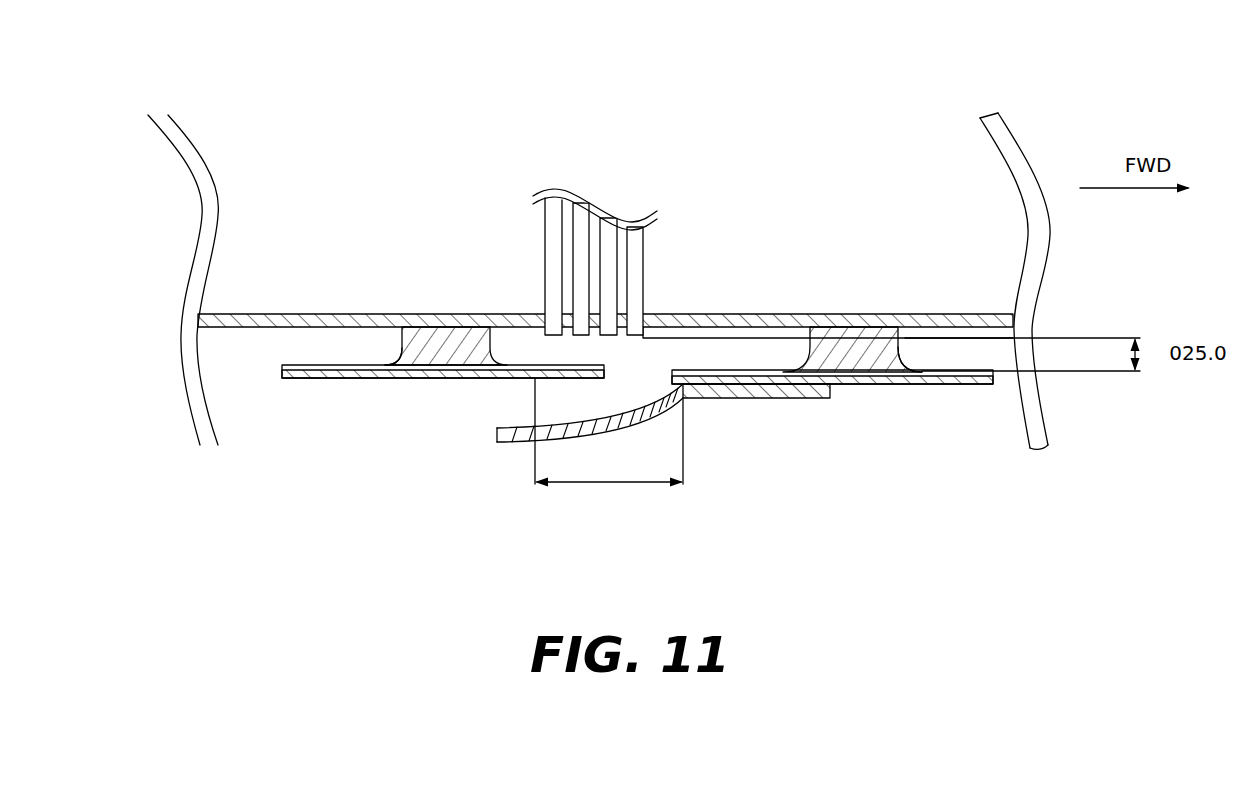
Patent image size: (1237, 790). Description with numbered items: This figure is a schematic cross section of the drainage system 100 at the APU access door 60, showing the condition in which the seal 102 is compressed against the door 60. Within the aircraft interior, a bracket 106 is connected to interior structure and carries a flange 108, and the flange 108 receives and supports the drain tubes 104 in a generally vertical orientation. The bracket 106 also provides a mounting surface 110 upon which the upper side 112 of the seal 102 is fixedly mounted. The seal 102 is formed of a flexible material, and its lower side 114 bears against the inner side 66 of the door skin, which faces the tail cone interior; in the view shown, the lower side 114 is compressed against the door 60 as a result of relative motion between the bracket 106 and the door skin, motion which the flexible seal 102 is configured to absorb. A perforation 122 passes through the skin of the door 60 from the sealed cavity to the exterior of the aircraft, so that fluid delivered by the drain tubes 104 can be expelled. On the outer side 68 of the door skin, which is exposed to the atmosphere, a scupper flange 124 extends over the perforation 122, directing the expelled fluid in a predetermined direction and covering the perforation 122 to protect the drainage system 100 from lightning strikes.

The drainage system 100 is at (748, 114).
The drain tubes 104 is at (600, 190).
The flange 108 is at (546, 320).
The inner side 66 is at (375, 363).
The perforation 122 is at (655, 353).
The bracket 106 is at (862, 315).
The lower side 114 is at (905, 338).
The mounting surface 110 is at (212, 362).
The outer side 68 is at (313, 378).
The seal 102 is at (433, 350).
The scupper flange 124 is at (496, 438).
The upper side 112 is at (807, 347).
The APU access door 60 is at (950, 387).